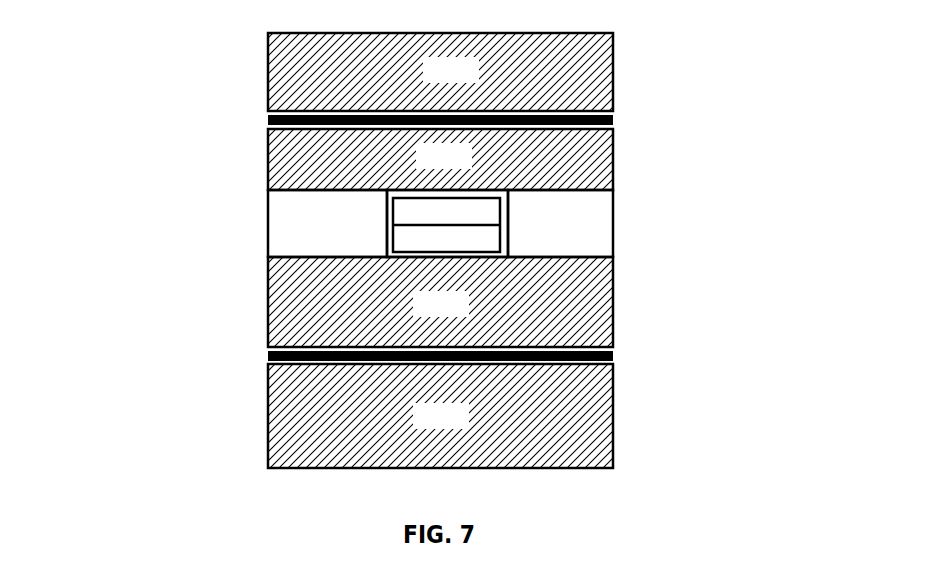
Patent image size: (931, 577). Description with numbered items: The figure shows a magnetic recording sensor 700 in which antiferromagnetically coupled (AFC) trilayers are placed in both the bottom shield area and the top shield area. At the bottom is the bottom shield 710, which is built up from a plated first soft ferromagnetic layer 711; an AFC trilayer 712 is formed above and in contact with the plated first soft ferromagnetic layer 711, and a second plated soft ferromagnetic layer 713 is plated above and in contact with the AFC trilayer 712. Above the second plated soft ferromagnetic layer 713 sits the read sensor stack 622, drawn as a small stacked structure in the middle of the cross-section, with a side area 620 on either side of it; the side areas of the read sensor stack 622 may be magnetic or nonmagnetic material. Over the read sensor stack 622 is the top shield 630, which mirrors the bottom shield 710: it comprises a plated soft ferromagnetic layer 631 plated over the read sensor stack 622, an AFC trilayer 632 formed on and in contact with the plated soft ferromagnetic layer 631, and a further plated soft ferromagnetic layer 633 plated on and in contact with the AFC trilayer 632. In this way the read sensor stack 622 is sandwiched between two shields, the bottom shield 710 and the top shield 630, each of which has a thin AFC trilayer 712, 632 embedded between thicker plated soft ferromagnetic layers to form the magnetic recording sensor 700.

The magnetic recording sensor 700 is at (803, 47).
The top shield 630 is at (399, 111).
The third layer of soft ferromagnetic material 633 is at (440, 72).
The AFC trilayer 632 is at (267, 111).
The second layer of soft ferromagnetic material 631 is at (440, 159).
The side area 620 is at (486, 223).
The read sensor stack 622 is at (377, 200).
The bottom shield 710 is at (396, 362).
The second plated soft ferromagnetic layer 713 is at (440, 302).
The AFC trilayer 712 is at (267, 355).
The plated first soft ferromagnetic layer 711 is at (440, 416).